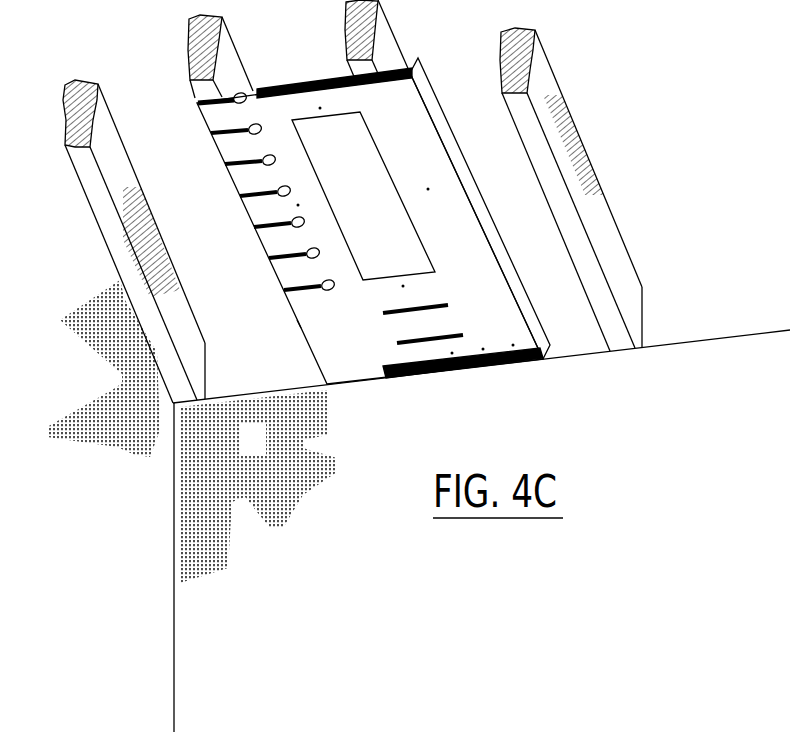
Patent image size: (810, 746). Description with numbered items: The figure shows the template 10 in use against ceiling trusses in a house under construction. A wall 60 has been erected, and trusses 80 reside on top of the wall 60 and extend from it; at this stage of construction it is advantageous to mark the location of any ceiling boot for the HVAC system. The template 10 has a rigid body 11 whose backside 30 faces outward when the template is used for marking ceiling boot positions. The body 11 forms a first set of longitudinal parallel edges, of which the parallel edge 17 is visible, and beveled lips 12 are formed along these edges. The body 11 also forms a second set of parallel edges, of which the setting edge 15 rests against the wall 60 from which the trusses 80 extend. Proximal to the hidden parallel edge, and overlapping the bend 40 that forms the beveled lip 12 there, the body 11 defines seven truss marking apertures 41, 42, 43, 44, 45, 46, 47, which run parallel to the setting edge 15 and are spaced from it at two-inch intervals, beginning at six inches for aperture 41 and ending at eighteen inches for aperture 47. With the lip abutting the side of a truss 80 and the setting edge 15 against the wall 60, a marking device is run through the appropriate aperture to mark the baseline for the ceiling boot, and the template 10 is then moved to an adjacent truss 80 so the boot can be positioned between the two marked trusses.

The template 10 is at (300, 357).
The body 11 is at (508, 333).
The beveled lips 12 is at (443, 128).
The setting edge 15 is at (384, 373).
The parallel edge 17 is at (426, 67).
The backside 30 is at (350, 367).
The bend 40 is at (298, 322).
The truss marking aperture 41 is at (286, 297).
The truss marking aperture 42 is at (268, 267).
The truss marking aperture 43 is at (252, 235).
The truss marking aperture 44 is at (239, 204).
The truss marking aperture 45 is at (226, 172).
The truss marking aperture 46 is at (212, 139).
The truss marking aperture 47 is at (198, 106).
The wall 60 is at (190, 600).
The trusses 80 is at (112, 118).